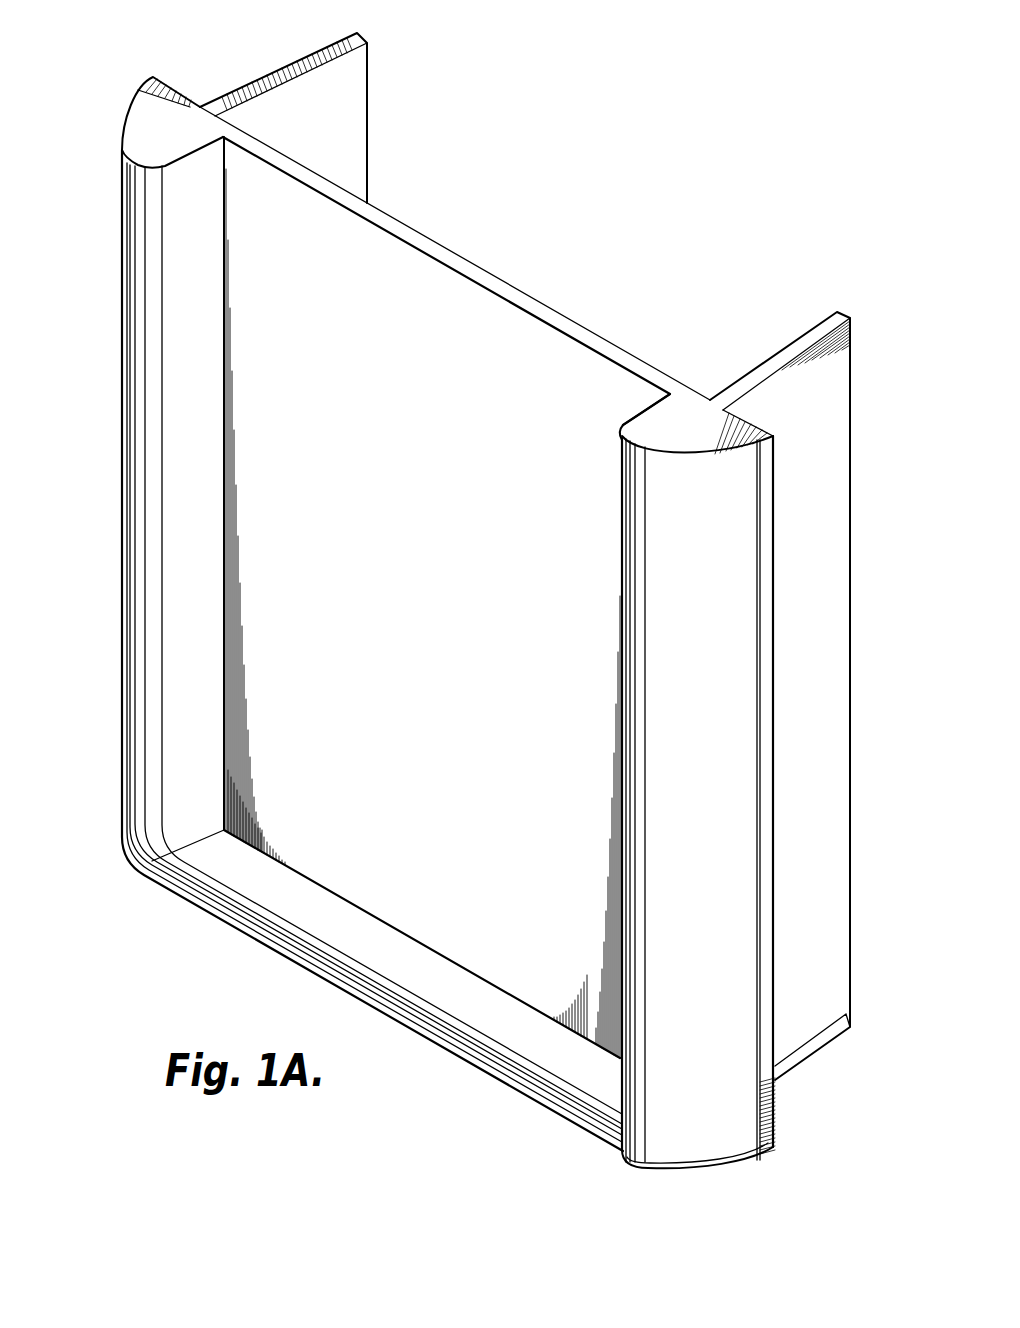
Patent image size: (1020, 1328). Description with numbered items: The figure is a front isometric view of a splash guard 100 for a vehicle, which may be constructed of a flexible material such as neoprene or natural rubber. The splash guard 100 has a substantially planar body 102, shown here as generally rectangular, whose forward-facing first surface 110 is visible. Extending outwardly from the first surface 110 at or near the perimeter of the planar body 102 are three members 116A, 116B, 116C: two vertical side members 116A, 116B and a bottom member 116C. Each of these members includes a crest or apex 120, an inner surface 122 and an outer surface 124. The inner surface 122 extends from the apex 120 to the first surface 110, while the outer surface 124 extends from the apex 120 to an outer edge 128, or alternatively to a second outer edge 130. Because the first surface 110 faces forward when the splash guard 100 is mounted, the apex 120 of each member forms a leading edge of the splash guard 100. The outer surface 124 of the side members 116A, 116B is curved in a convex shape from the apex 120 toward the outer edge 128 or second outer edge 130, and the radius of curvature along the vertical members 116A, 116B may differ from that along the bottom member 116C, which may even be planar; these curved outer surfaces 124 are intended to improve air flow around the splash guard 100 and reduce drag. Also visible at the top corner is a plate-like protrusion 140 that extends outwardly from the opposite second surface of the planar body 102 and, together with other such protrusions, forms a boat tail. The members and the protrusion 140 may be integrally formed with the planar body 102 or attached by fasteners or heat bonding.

The splash guard 100 is at (614, 172).
The planar body 102 is at (467, 267).
The first surface 110 is at (470, 618).
The member 116A is at (160, 118).
The member 116B is at (693, 427).
The bottom member 116C is at (215, 895).
The apex 120 is at (142, 233).
The inner surface 122 is at (195, 347).
The outer surface 124 is at (122, 130).
The outer edge 128 is at (760, 1102).
The second outer edge 130 is at (777, 1040).
The plate-like protrusion 140 is at (272, 78).